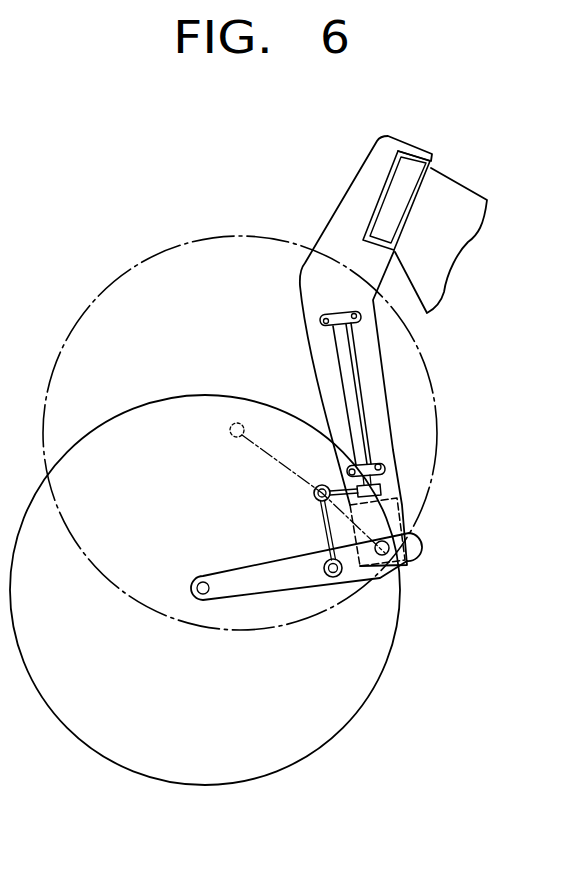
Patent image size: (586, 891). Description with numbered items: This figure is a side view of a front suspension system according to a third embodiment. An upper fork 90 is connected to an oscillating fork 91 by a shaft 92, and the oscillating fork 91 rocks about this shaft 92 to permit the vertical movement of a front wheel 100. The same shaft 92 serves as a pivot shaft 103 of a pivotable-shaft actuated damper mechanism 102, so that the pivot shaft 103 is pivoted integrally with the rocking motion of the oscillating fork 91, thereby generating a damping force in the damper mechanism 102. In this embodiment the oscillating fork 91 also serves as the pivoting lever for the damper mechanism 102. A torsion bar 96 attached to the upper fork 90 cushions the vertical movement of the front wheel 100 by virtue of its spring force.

The upper fork 90 is at (303, 288).
The oscillating fork 91 is at (260, 583).
The shaft 92 is at (438, 592).
The torsion bar 96 is at (347, 357).
The front wheel 100 is at (201, 786).
The pivotable-shaft actuated damper mechanism 102 is at (403, 508).
The pivot shaft 103 is at (382, 556).